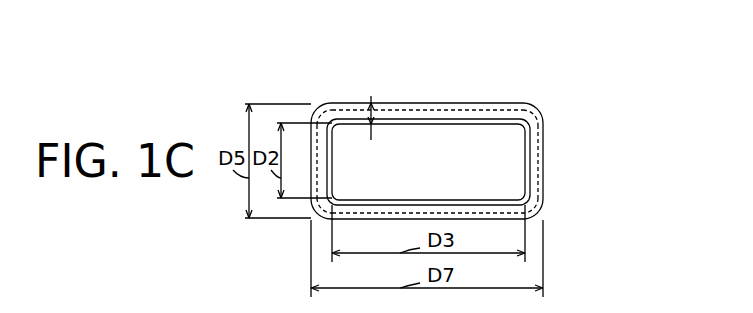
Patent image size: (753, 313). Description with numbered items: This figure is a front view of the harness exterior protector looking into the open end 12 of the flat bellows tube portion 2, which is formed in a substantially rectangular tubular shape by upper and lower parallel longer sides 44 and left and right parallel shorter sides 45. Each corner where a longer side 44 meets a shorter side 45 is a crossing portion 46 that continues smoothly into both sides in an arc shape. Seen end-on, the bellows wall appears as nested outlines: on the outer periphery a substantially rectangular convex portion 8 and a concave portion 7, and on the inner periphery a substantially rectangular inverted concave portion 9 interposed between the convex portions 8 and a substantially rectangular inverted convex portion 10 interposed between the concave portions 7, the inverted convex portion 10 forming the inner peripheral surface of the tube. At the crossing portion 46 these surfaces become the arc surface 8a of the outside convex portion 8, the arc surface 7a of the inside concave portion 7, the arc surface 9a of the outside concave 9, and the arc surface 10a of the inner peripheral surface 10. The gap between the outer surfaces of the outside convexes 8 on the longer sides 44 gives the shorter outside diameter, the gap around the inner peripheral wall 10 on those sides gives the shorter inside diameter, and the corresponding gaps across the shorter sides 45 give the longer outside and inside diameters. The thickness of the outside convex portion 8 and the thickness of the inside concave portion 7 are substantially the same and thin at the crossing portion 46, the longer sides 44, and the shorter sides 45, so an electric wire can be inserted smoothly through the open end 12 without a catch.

The flat bellows tube portion 2 is at (470, 56).
The concave portion 7 is at (490, 118).
The arc surface of inside concave portion 7a is at (531, 120).
The convex portion 8 is at (548, 144).
The arc surface of outside convex portion 8a is at (548, 113).
The inverted concave portion 9 is at (536, 169).
The arc surface of outside concave 9a is at (548, 137).
The inverted convex portion 10 is at (524, 156).
The arc surface of inner peripheral surface 10a is at (521, 133).
The open end 12 is at (530, 195).
The longer side 44 is at (426, 103).
The shorter side 45 is at (311, 147).
The crossing portion 46 is at (548, 118).